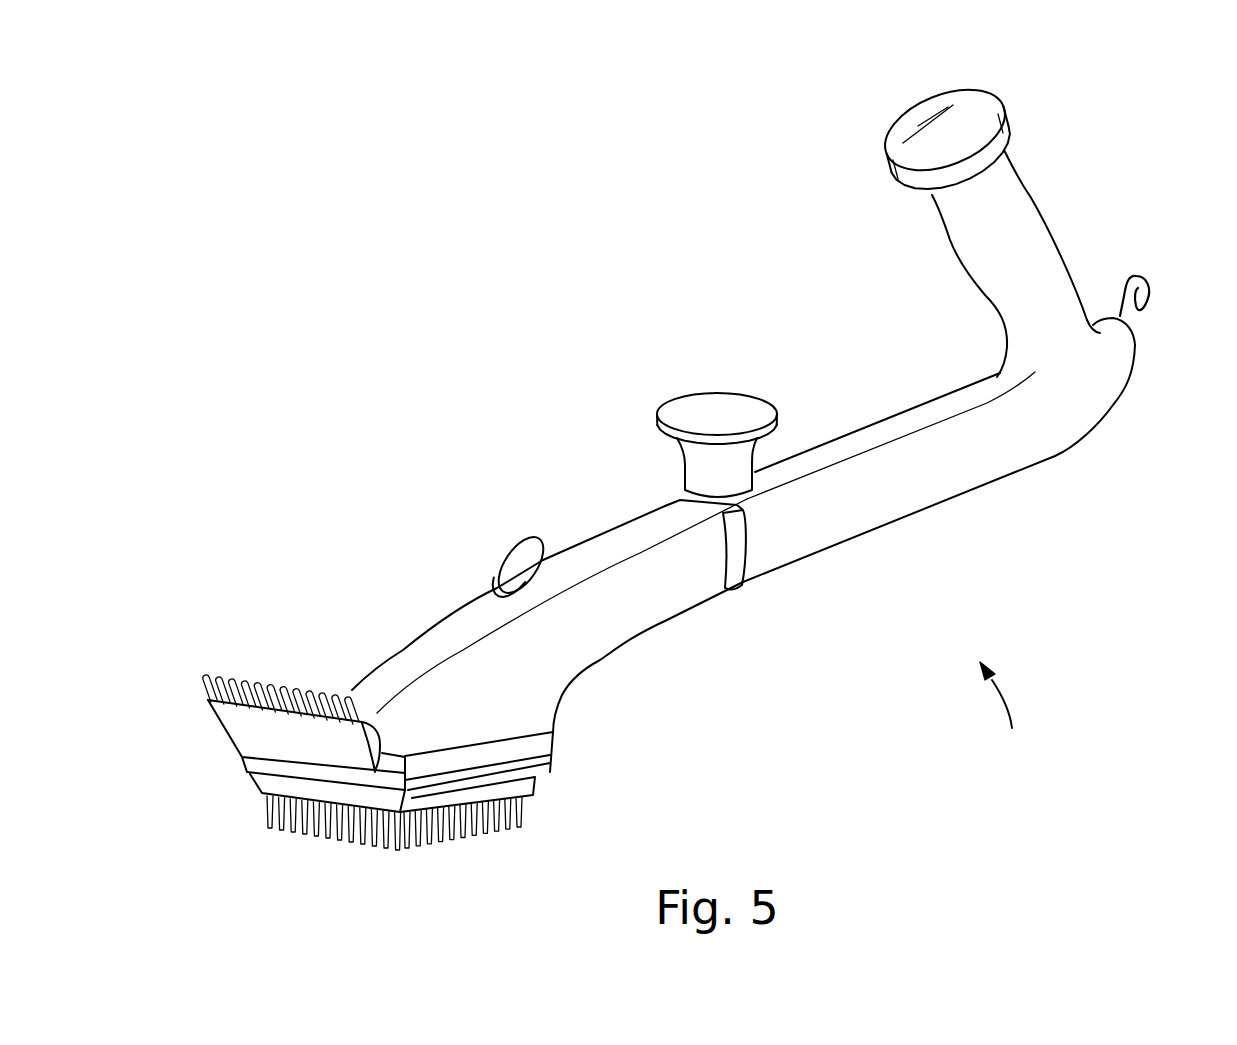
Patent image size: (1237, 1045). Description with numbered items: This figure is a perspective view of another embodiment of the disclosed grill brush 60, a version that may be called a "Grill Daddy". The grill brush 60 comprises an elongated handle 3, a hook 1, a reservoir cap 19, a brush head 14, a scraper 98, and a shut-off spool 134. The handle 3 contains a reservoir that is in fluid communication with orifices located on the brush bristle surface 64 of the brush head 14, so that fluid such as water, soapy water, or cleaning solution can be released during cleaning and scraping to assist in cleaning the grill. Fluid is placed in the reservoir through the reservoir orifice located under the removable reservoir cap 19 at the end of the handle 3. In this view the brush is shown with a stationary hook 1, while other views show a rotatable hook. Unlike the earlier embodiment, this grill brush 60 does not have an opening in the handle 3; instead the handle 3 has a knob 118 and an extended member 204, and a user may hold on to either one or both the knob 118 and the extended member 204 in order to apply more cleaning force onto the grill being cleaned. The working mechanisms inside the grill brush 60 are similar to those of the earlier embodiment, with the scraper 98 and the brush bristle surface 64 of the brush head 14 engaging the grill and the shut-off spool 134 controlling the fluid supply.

The hook 1 is at (1142, 270).
The handle 3 is at (913, 483).
The brush head 14 is at (533, 777).
The reservoir cap 19 is at (963, 102).
The grill brush 60 is at (1004, 711).
The brush bristle surface 64 is at (530, 795).
The scraper 98 is at (227, 722).
The knob 118 is at (716, 407).
The shut-off spool 134 is at (518, 535).
The extended member 204 is at (1028, 246).